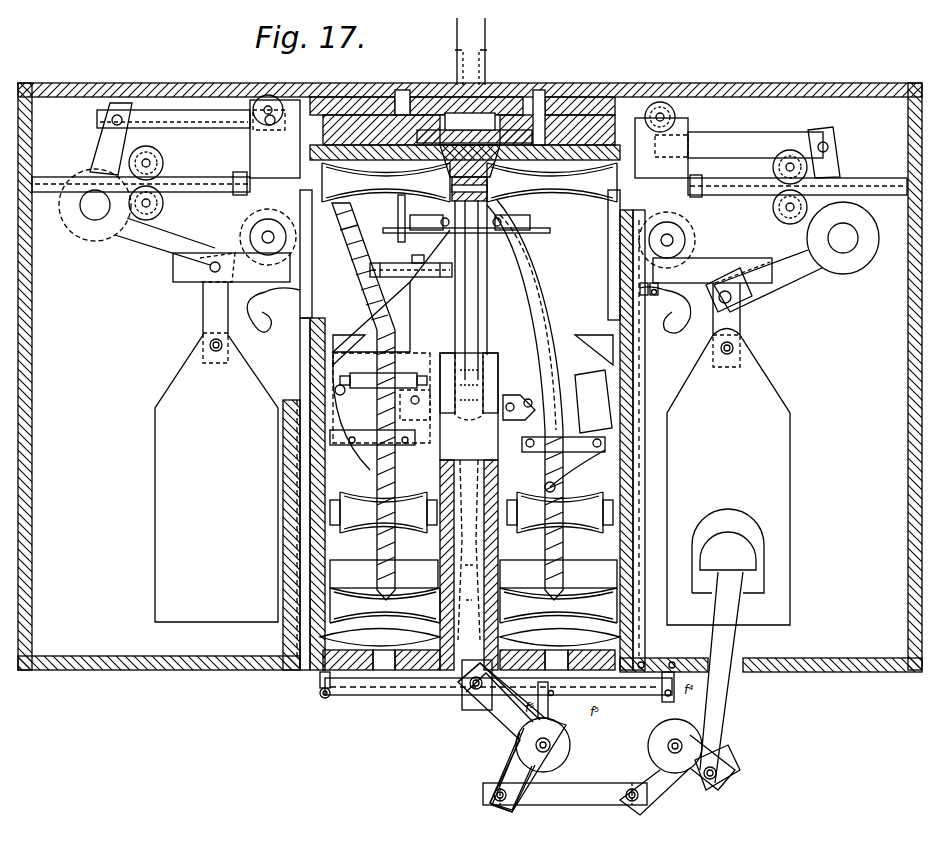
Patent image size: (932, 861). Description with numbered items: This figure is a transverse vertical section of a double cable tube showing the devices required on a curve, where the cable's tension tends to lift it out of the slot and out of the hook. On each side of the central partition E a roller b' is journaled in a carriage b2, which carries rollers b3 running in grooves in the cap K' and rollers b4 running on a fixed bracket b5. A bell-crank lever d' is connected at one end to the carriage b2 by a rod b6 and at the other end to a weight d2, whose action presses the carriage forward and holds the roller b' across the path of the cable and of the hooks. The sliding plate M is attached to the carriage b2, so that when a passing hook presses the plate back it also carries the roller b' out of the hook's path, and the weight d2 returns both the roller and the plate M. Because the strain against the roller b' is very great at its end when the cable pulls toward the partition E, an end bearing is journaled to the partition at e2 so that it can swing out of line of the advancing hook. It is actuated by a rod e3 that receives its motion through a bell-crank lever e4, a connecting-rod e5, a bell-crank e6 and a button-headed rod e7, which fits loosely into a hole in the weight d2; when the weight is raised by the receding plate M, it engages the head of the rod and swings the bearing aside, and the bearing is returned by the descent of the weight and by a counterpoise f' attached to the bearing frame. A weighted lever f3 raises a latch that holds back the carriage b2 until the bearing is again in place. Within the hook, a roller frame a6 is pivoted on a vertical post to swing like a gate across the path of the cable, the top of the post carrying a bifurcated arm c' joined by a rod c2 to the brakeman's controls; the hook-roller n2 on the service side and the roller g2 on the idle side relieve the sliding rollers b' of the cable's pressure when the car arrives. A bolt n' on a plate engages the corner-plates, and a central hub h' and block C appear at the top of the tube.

The cap K' is at (470, 368).
The sliding plate M is at (462, 117).
The central block C is at (470, 173).
The roller b' is at (469, 182).
The carriage b2 is at (469, 139).
The roller b3 is at (676, 113).
The roller b4 is at (690, 243).
The fixed bracket b5 is at (472, 268).
The rod b6 is at (460, 134).
The central shaft h' is at (469, 290).
The bifurcated arm c' is at (411, 275).
The rod c2 is at (411, 282).
The frame (gate) a6 is at (391, 295).
The bolt n' is at (381, 401).
The roller (hook-roller) n2 is at (380, 411).
The hook-roller g2 is at (525, 400).
The bell-crank lever d' is at (606, 309).
The weight d2 is at (472, 453).
The journal of bearing e2 is at (469, 406).
The partition E is at (469, 565).
The counterpoise f' is at (468, 550).
The weighted lever f3 is at (471, 308).
The rod e3 is at (497, 689).
The bell-crank lever e4 is at (514, 737).
The connecting-rod e5 is at (565, 747).
The bell-crank e6 is at (680, 767).
The button-headed rod e7 is at (728, 646).